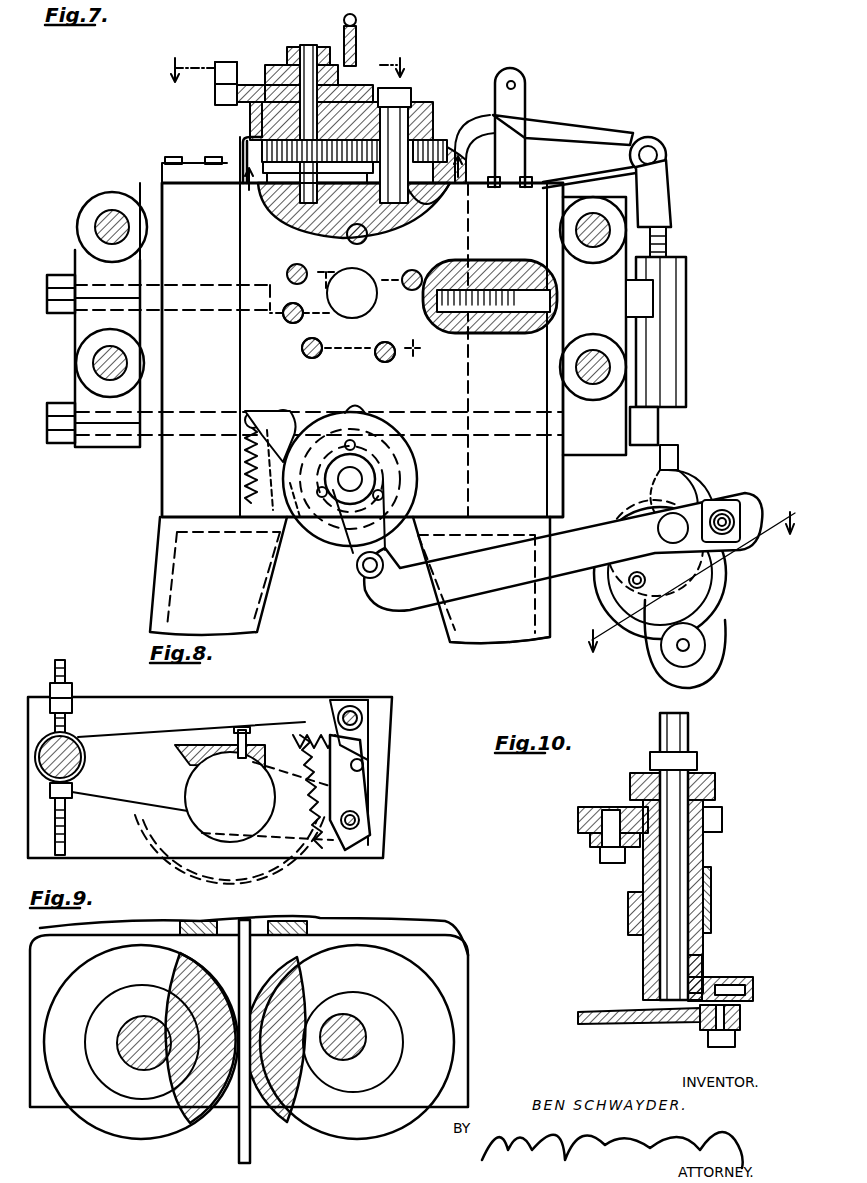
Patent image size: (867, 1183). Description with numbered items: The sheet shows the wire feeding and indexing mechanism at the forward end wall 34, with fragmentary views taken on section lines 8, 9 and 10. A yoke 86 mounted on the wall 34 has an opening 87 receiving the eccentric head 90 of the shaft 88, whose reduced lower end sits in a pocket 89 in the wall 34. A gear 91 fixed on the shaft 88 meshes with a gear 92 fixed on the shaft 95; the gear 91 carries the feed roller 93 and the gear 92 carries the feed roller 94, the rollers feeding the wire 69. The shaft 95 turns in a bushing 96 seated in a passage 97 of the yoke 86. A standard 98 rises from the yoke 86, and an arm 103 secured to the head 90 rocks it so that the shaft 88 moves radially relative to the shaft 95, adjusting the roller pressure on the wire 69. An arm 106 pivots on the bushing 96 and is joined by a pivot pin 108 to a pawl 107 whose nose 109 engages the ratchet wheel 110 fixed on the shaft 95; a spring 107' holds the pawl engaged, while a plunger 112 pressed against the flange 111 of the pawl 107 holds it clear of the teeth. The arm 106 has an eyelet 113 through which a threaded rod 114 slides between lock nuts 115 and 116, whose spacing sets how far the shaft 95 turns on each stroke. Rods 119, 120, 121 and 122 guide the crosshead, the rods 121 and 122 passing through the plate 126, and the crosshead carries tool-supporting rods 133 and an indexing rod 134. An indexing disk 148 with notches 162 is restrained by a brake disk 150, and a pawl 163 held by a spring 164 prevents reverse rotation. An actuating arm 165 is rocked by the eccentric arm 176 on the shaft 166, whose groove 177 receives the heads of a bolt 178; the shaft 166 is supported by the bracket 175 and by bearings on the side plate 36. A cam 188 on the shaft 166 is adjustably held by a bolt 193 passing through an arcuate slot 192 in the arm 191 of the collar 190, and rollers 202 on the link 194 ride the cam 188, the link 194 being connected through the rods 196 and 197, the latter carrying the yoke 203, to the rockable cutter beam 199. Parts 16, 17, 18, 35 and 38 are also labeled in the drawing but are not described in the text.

In FIG. 7, the arm 106 is at (268, 65).
In FIG. 8, the arm 106 is at (130, 750).
In FIG. 7, the shaft 95 is at (308, 47).
In FIG. 9, the shaft 95 is at (143, 1072).
In FIG. 7, the plunger 112 is at (358, 32).
In FIG. 7, the section line 8- 8 is at (284, 73).
In FIG. 7, the eccentric collar or head 90 is at (405, 95).
In FIG. 7, the opening or passage 87 is at (440, 100).
In FIG. 7, the arm 103 is at (513, 72).
In FIG. 7, the gear 91 is at (520, 92).
In FIG. 7, the standard 98 is at (560, 125).
In FIG. 7, the rockable cutter beam 199 is at (600, 140).
In FIG. 7, the yoke 203 is at (660, 185).
In FIG. 7, the rod 121 is at (610, 230).
In FIG. 7, the rod 197 is at (670, 245).
In FIG. 7, the bushing 96 is at (214, 100).
In FIG. 7, the yoke 86 is at (265, 107).
In FIG. 7, the passage 97 is at (243, 133).
In FIG. 7, the gear 92 is at (257, 163).
In FIG. 7, the section line 9- 9 is at (353, 174).
In FIG. 7, the feed roller 93 is at (470, 207).
In FIG. 9, the feed roller 93 is at (420, 1068).
In FIG. 7, the shaft 88 is at (362, 244).
In FIG. 9, the shaft 88 is at (366, 1035).
In FIG. 7, the pocket 89 is at (412, 222).
In FIG. 7, the feed roller 94 is at (260, 200).
In FIG. 9, the feed roller 94 is at (88, 1108).
In FIG. 7, the bolt holes 16 is at (281, 264).
In FIG. 7, the bolt hole 18 is at (315, 305).
In FIG. 7, the bolt holes 17 is at (292, 354).
In FIG. 7, the rod 119 is at (100, 225).
In FIG. 7, the rod 120 is at (100, 362).
In FIG. 7, the plate 126 is at (155, 345).
In FIG. 7, the indexing rod 134 is at (290, 325).
In FIG. 7, the tool-supporting rods 133 is at (312, 360).
In FIG. 7, the rod 122 is at (612, 365).
In FIG. 7, the rod 196 is at (680, 425).
In FIG. 7, the arm 176 is at (690, 440).
In FIG. 10, the arm 176 is at (717, 975).
In FIG. 7, the link 194 is at (710, 465).
In FIG. 7, the rollers 202 is at (700, 480).
In FIG. 7, the bolt 178 is at (745, 500).
In FIG. 10, the bolt 178 is at (742, 1013).
In FIG. 7, the section line 10- 10 is at (696, 590).
In FIG. 7, the housing 35 is at (165, 470).
In FIG. 7, the spring 164 is at (243, 476).
In FIG. 7, the notches 162 is at (395, 433).
In FIG. 7, the indexing disk 148 is at (405, 480).
In FIG. 7, the pawl 163 is at (267, 517).
In FIG. 7, the forward end wall 34 is at (298, 520).
In FIG. 7, the brake disk 150 is at (338, 555).
In FIG. 7, the skirt 38 is at (245, 612).
In FIG. 7, the actuating arm 165 is at (503, 580).
In FIG. 10, the actuating arm 165 is at (680, 1025).
In FIG. 7, the side plate 36 is at (550, 582).
In FIG. 7, the bolt 193 is at (630, 585).
In FIG. 10, the bolt 193 is at (577, 822).
In FIG. 7, the arcuate slot 192 is at (725, 612).
In FIG. 10, the arcuate slot 192 is at (630, 862).
In FIG. 7, the arm 191 is at (645, 650).
In FIG. 10, the arm 191 is at (600, 858).
In FIG. 8, the threaded rod 114 is at (55, 705).
In FIG. 8, the lock nut 115 is at (72, 690).
In FIG. 8, the eyelet 113 is at (80, 745).
In FIG. 8, the spring 107' is at (226, 717).
In FIG. 8, the flange 111 is at (290, 735).
In FIG. 8, the wire 69 is at (352, 712).
In FIG. 9, the wire 69 is at (250, 1145).
In FIG. 8, the pawl 107 is at (390, 792).
In FIG. 8, the pivot pin 108 is at (360, 820).
In FIG. 8, the nose 109 is at (345, 862).
In FIG. 8, the ratchet wheel 110 is at (300, 820).
In FIG. 8, the lock nut 116 is at (70, 795).
In FIG. 10, the cam 188 is at (722, 812).
In FIG. 10, the collar 190 is at (700, 858).
In FIG. 10, the bracket 175 is at (703, 878).
In FIG. 10, the shaft 166 is at (711, 900).
In FIG. 10, the groove 177 is at (740, 985).